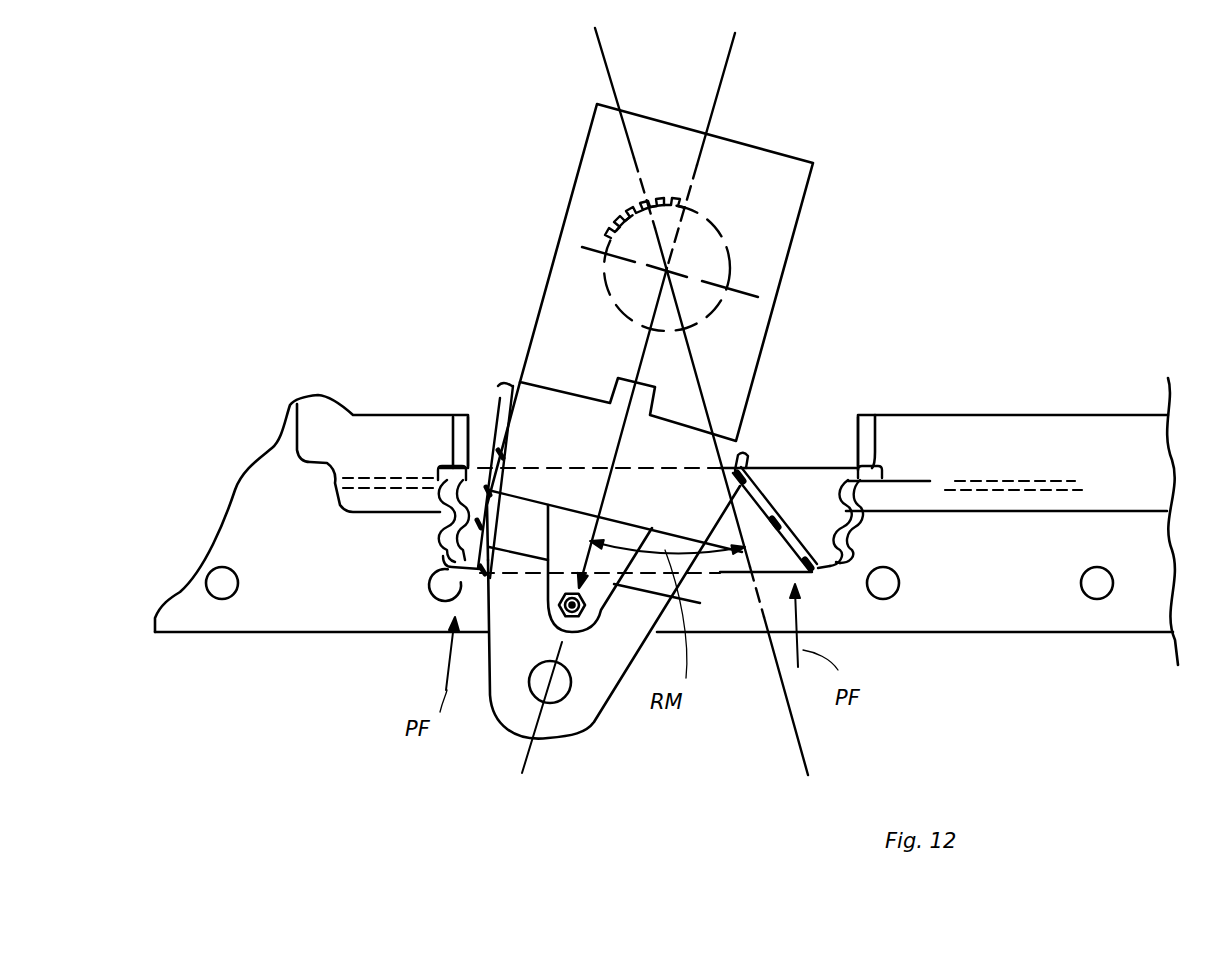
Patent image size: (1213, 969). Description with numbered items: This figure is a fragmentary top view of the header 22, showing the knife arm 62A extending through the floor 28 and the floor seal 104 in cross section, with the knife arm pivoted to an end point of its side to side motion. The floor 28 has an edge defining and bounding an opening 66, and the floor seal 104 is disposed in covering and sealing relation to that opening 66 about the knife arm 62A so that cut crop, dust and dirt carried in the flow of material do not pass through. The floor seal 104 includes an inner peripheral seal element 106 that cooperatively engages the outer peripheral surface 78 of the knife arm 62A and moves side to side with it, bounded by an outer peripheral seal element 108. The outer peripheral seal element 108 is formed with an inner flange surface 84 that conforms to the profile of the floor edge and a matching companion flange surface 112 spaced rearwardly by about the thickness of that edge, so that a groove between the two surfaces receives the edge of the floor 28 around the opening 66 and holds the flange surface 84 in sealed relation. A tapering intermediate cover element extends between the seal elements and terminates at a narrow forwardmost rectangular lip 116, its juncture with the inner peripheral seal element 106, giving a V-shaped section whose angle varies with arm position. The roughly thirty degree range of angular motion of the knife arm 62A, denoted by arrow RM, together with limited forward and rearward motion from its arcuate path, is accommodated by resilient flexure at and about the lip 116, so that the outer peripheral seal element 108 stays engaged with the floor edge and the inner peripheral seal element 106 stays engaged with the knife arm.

The header 22 is at (1062, 250).
The floor 28 is at (297, 452).
The knife arm 62A is at (580, 740).
The opening 66 is at (803, 455).
The outer peripheral surface 78 is at (515, 382).
The inner flange surface 84 is at (447, 494).
The floor seal 104 is at (826, 578).
The inner peripheral seal element 106 is at (507, 396).
The outer peripheral seal element 108 is at (448, 548).
The companion flange surface 112 is at (468, 417).
The lip 116 is at (720, 575).